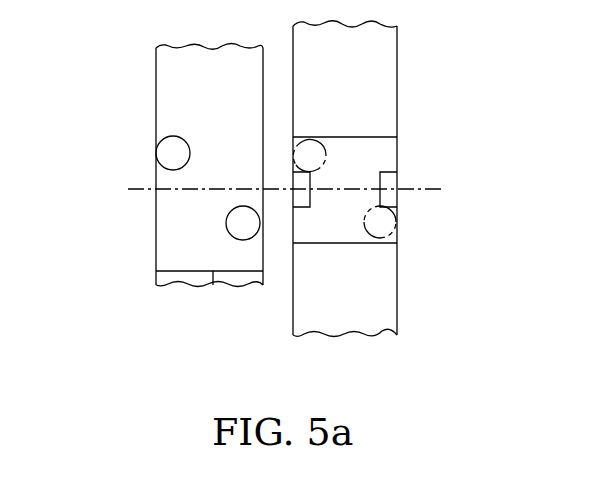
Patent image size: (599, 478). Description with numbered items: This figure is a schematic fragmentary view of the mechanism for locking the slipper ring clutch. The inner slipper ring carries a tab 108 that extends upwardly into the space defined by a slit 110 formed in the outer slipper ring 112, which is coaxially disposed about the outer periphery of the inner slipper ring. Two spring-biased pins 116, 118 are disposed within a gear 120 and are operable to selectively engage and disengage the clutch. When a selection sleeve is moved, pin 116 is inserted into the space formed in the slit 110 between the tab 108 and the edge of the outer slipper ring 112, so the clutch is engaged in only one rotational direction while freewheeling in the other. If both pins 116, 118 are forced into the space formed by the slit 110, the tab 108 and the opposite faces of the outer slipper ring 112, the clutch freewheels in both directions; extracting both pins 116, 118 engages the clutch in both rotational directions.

The tab 108 is at (310, 178).
The slit 110 is at (315, 224).
The outer slipper ring 112 is at (392, 287).
The spring-biased pin 116 is at (226, 222).
The spring-biased pin 118 is at (156, 153).
The gear 120 is at (213, 285).